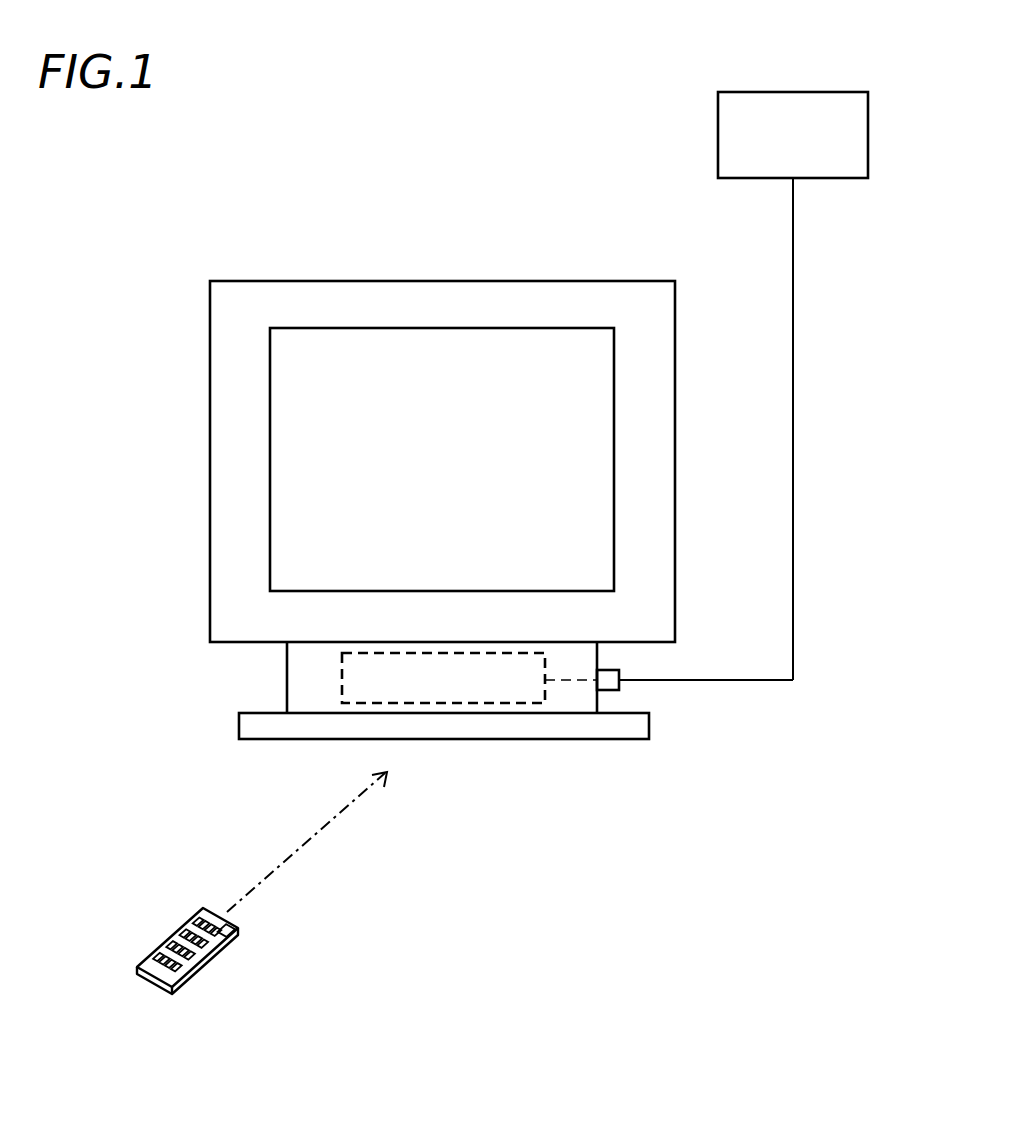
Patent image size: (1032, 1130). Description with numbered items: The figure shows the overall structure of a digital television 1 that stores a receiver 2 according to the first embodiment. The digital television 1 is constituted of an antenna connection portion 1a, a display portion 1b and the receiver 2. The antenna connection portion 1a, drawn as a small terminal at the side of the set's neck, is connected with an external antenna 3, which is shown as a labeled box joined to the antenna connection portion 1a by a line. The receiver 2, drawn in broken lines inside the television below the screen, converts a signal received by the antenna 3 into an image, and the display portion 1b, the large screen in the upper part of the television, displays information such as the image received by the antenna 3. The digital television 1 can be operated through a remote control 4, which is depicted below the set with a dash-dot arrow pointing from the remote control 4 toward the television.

The digital television 1 is at (246, 210).
The antenna connection portion 1a is at (621, 688).
The display portion 1b is at (615, 384).
The receiver 2 is at (342, 676).
The antenna 3 is at (834, 92).
The remote control 4 is at (208, 963).